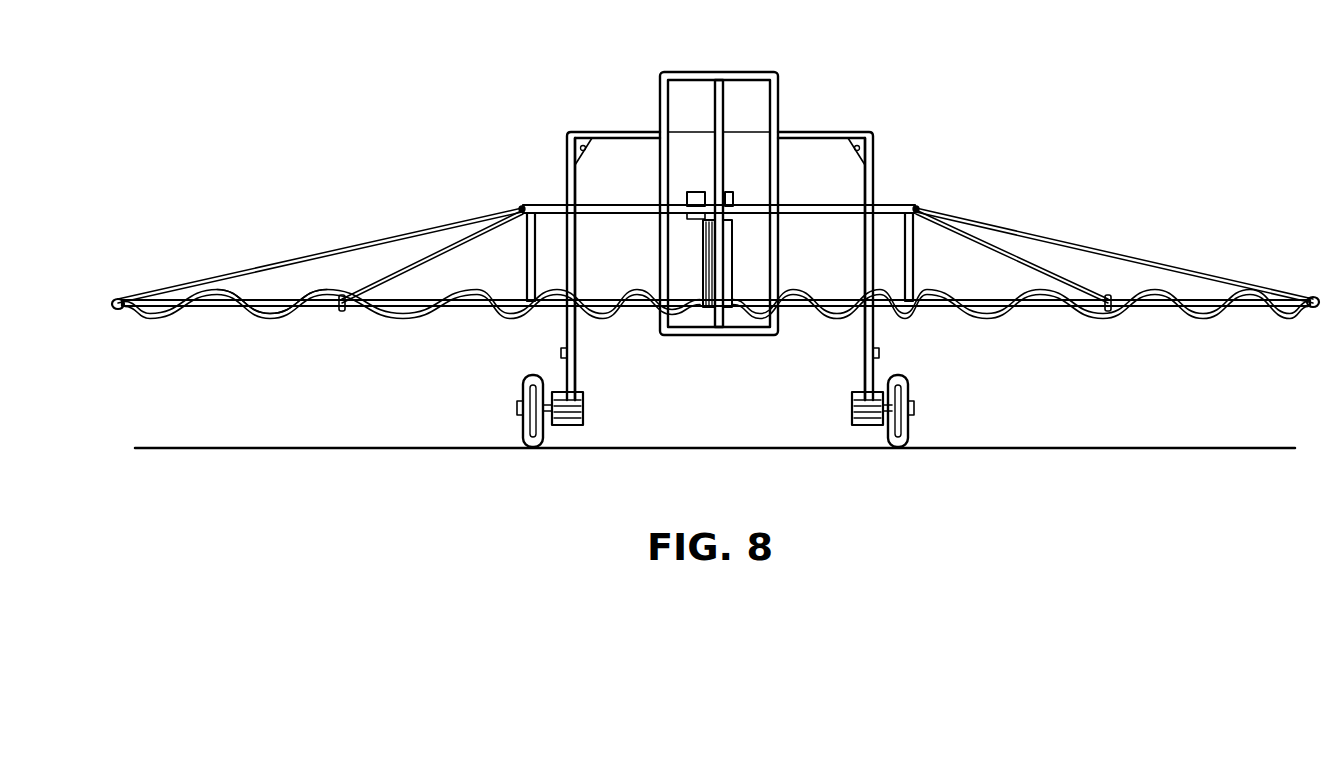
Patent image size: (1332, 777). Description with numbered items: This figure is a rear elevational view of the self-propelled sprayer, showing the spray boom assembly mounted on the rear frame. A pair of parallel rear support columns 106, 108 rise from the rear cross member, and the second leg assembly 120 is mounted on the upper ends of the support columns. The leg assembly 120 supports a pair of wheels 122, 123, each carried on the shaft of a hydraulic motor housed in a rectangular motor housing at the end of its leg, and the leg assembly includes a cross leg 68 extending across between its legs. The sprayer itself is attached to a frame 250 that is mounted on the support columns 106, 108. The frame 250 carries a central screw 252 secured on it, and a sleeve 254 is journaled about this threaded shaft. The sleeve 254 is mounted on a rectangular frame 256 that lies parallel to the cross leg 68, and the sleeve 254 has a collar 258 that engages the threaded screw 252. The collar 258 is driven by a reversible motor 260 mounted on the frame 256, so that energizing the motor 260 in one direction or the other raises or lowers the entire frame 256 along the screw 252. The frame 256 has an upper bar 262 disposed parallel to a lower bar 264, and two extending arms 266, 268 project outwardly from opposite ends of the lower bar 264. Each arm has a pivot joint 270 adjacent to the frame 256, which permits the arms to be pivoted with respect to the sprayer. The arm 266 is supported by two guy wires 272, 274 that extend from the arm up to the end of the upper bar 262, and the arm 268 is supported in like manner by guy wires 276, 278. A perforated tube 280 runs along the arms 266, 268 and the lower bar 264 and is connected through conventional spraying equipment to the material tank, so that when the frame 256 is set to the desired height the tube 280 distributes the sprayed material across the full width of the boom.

The cross leg 68 is at (852, 132).
The rear support column 106 is at (660, 193).
The rear support column 108 is at (776, 190).
The second leg assembly 120 is at (569, 126).
The wheel 122 is at (905, 438).
The wheel 123 is at (520, 428).
The sprayer frame 250 is at (786, 70).
The central screw 252 is at (720, 97).
The sleeve 254 is at (731, 265).
The rectangular frame 256 is at (898, 194).
The collar 258 is at (733, 190).
The motor 260 is at (693, 190).
The upper bar 262 is at (603, 214).
The lower bar 264 is at (633, 307).
The extending arm 266 is at (280, 308).
The extending arm 268 is at (1128, 314).
The pivot joint 270 is at (493, 307).
The guy wire 272 is at (283, 263).
The guy wire 274 is at (413, 263).
The guy wire 276 is at (1085, 243).
The guy wire 278 is at (1052, 272).
The perforated tube 280 is at (160, 320).